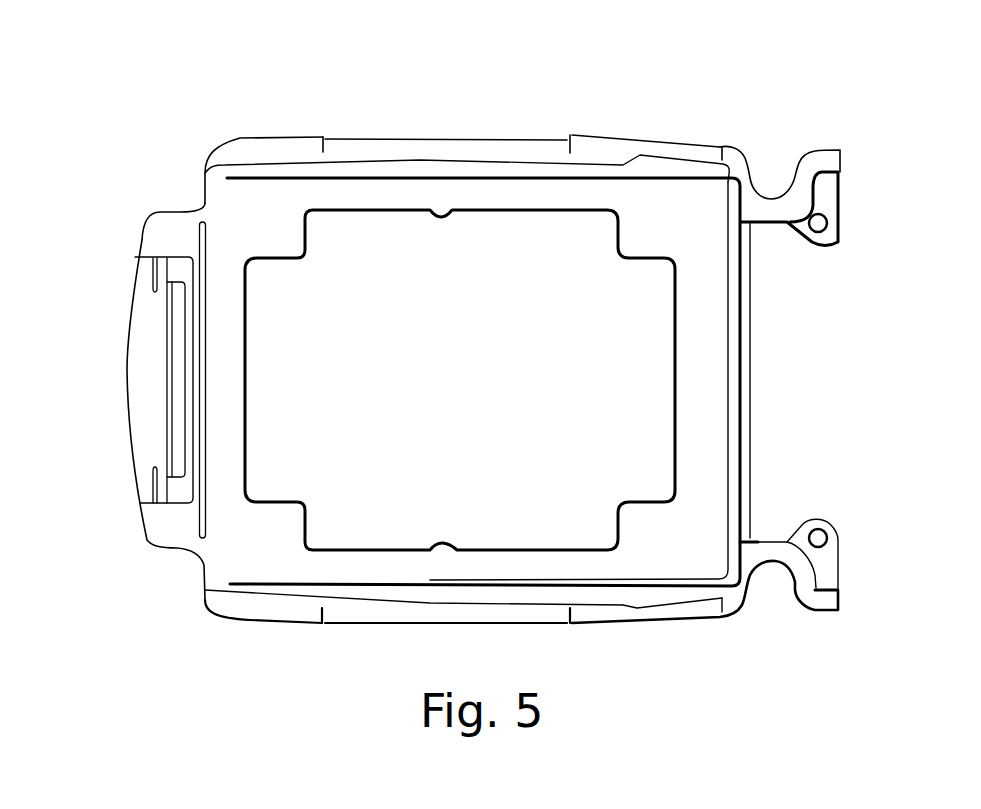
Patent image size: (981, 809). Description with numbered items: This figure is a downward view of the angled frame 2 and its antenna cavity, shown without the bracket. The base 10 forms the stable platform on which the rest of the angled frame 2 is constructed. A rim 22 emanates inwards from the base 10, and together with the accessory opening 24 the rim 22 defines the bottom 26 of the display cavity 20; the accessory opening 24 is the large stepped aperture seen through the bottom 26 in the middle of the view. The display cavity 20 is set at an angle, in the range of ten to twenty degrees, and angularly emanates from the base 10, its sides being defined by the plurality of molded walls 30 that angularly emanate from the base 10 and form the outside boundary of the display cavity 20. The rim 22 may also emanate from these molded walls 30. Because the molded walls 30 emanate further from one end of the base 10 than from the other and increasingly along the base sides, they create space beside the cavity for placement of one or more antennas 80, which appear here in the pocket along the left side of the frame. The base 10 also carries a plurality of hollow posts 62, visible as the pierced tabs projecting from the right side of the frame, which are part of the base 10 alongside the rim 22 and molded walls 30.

The device assembly 2 is at (584, 92).
The base 10 is at (745, 158).
The display cavity 20 is at (710, 375).
The rim 22 is at (710, 420).
The accessory opening 24 is at (647, 330).
The bottom 26 is at (707, 460).
The molded walls 30 is at (293, 180).
The hollow posts 62 is at (830, 537).
The antennas 80 is at (177, 365).